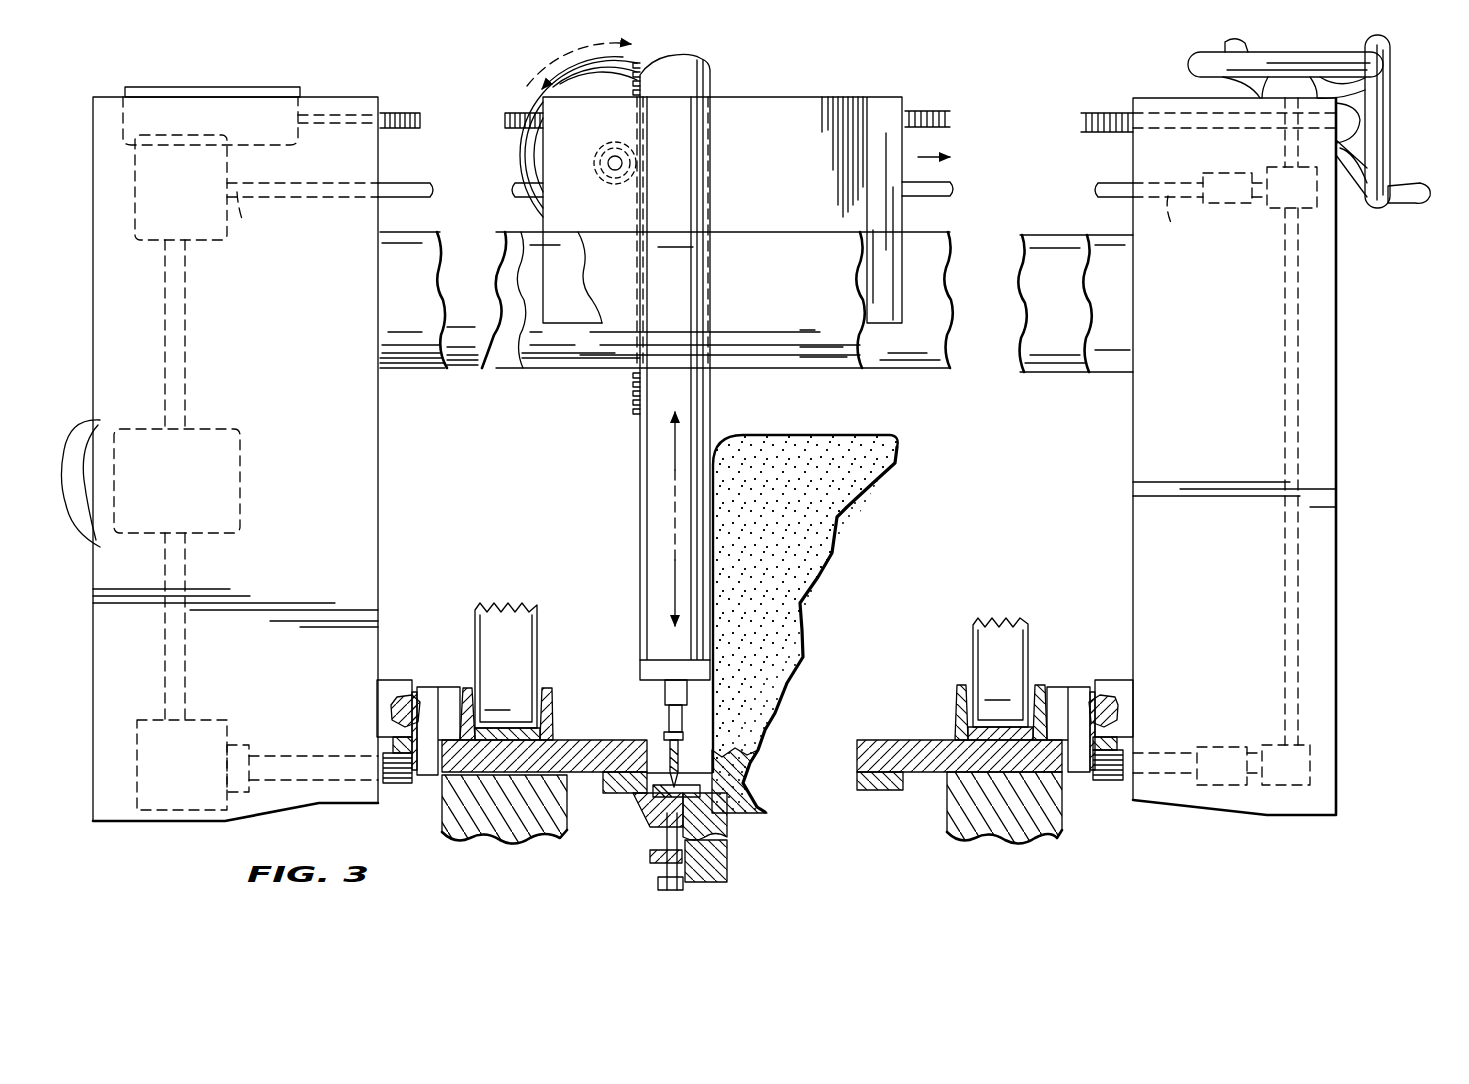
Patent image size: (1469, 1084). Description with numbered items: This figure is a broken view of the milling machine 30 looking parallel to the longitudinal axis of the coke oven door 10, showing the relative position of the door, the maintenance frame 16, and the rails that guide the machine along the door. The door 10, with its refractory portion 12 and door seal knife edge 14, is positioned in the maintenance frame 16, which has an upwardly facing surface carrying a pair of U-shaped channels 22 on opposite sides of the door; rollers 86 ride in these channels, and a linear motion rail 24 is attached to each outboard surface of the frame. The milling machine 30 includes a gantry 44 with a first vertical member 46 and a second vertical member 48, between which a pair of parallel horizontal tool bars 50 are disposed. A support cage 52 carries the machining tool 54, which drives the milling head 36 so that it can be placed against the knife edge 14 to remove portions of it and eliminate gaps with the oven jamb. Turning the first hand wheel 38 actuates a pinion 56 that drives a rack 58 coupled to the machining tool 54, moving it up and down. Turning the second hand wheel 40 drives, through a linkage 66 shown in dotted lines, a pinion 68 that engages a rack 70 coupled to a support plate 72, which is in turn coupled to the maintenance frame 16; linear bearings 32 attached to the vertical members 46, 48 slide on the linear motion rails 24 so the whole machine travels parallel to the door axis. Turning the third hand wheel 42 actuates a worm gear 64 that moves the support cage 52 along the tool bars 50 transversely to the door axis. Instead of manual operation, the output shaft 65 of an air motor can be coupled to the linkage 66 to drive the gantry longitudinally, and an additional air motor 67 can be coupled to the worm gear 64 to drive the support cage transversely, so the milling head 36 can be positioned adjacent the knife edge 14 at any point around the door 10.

The coke oven door 10 is at (912, 556).
The refractory portion 12 is at (838, 487).
The door seal knife edge 14 is at (750, 773).
The maintenance frame 16 is at (458, 822).
The channels 22 is at (555, 723).
The linear motion rail 24 is at (392, 710).
The milling machine 30 is at (420, 95).
The linear bearings 32 is at (393, 678).
The milling head 36 is at (668, 752).
The first hand wheel 38 is at (614, 80).
The second hand wheel 40 is at (1196, 60).
The third hand wheel 42 is at (1377, 205).
The gantry 44 is at (990, 128).
The first vertical member 46 is at (1140, 554).
The second vertical member 48 is at (355, 523).
The tool bars 50 is at (420, 337).
The support cage 52 is at (750, 96).
The machining tool 54 is at (698, 410).
The pinion 56 is at (606, 183).
The rack 58 is at (636, 398).
The worm gear 64 is at (925, 110).
The output shaft 65 is at (220, 500).
The linkage 66 is at (415, 187).
The air motor 67 is at (290, 95).
The pinion 68 is at (395, 783).
The rack 70 is at (393, 745).
The support plate 72 is at (427, 690).
The rollers 86 is at (522, 655).